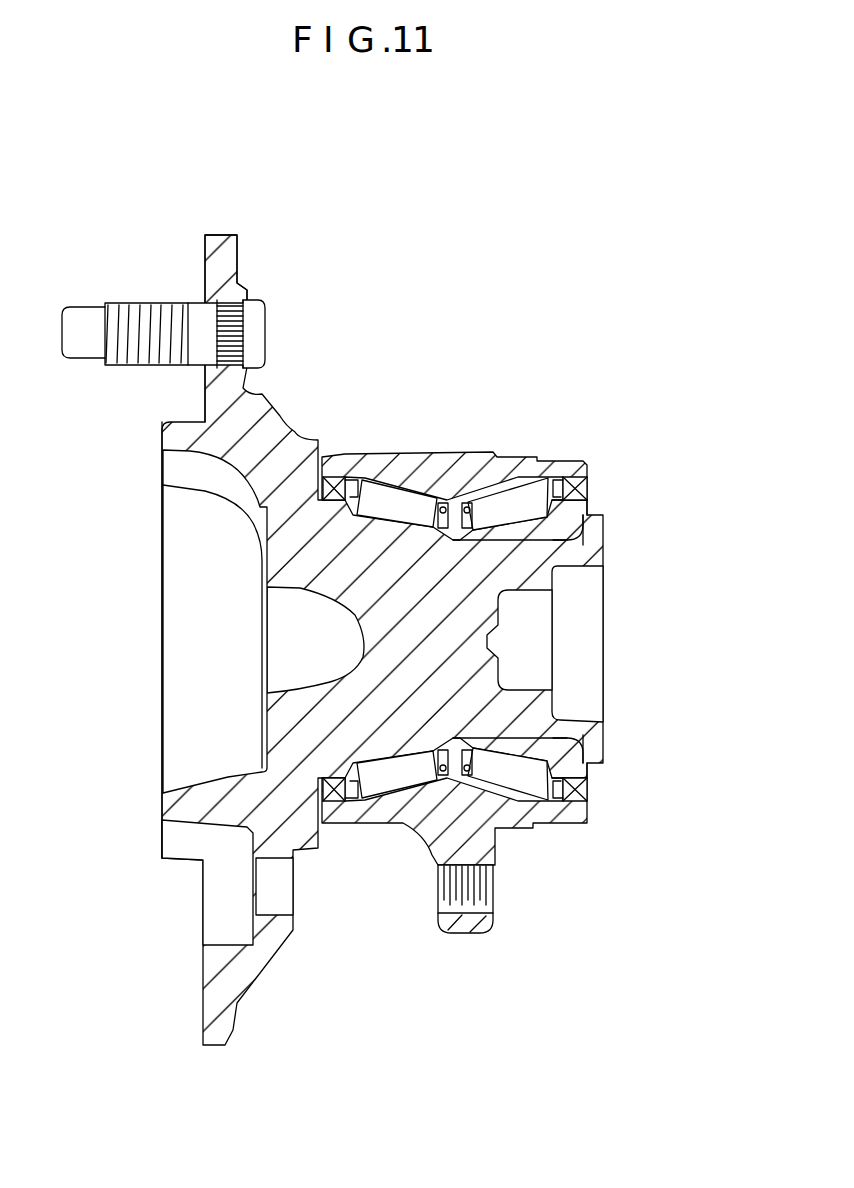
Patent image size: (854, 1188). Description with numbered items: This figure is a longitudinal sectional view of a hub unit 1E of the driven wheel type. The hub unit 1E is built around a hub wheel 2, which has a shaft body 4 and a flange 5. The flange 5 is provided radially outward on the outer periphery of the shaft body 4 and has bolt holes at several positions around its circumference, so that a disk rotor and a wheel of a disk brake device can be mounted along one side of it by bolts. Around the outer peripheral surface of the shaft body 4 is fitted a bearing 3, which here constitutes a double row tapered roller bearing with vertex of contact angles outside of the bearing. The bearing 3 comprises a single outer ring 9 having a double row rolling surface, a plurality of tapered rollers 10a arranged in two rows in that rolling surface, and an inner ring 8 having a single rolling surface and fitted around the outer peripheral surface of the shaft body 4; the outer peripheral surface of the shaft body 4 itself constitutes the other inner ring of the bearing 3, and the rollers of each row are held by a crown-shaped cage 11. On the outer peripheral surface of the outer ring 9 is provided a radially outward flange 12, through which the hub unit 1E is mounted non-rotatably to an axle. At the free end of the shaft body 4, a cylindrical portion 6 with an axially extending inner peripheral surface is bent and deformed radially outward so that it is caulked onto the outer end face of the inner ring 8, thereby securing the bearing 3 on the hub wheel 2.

The hub unit 1E is at (637, 333).
The hub wheel 2 is at (278, 720).
The bearing 3 is at (455, 452).
The shaft body 4 is at (387, 700).
The flange 5 is at (222, 252).
The cylindrical portion 6 is at (592, 537).
The inner ring 8 is at (570, 520).
The outer ring 9 is at (393, 466).
The tapered rollers 10a is at (382, 465).
The cage 11 is at (446, 755).
The flange 12 is at (468, 925).